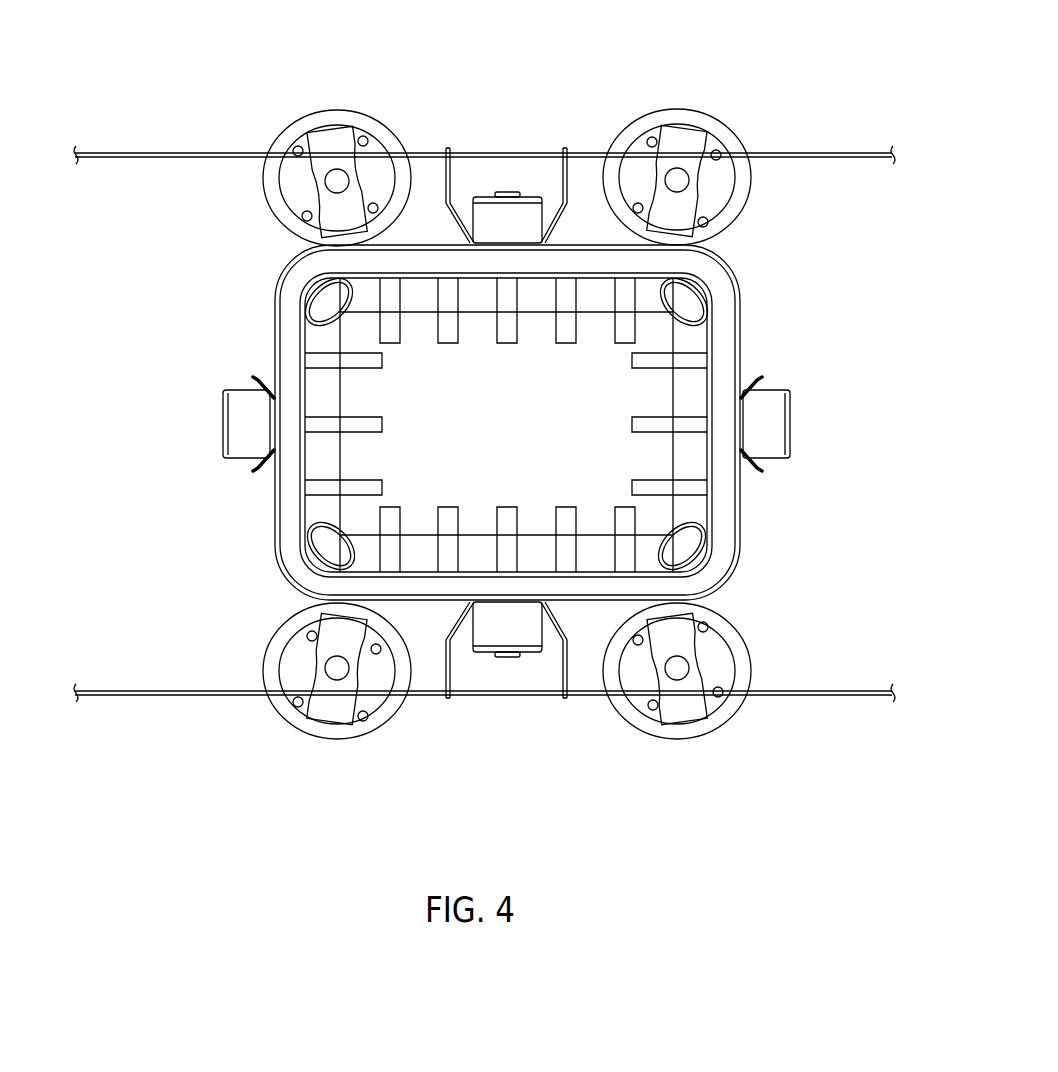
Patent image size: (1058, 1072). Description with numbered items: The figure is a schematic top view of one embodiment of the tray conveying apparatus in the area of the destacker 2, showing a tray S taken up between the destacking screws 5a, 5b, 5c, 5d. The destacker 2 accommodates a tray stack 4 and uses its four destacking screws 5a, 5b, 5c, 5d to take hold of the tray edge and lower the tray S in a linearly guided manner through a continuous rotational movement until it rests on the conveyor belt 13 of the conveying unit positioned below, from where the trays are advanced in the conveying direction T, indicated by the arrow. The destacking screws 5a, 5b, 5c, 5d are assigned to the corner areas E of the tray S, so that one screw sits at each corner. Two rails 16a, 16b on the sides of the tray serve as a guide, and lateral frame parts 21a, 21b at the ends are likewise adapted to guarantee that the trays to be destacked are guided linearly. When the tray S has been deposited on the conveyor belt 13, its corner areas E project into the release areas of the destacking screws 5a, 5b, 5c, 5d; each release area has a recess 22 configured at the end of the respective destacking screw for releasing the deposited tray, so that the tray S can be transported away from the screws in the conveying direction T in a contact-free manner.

The de-stacker 2 is at (812, 74).
The tray stack 4 is at (740, 537).
The destacking screw 5a is at (350, 108).
The destacking screw 5b is at (350, 740).
The destacking screw 5c is at (693, 108).
The destacking screw 5d is at (695, 740).
The conveyor belt 13 is at (842, 433).
The rail 16a is at (222, 392).
The rail 16b is at (791, 392).
The lateral frame part 21a is at (567, 160).
The lateral frame part 21b is at (567, 690).
The recess 22 is at (641, 238).
The corner area E is at (735, 267).
The tray S is at (641, 404).
The conveying direction T is at (795, 220).